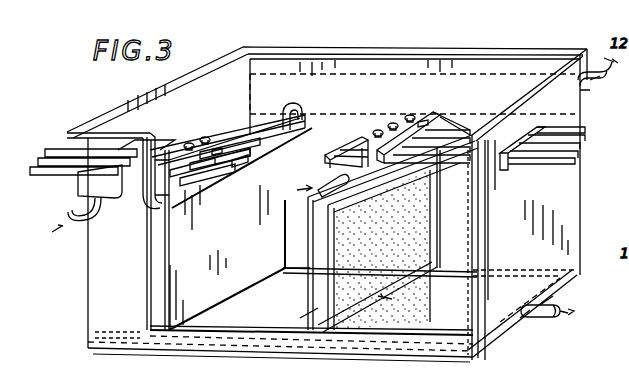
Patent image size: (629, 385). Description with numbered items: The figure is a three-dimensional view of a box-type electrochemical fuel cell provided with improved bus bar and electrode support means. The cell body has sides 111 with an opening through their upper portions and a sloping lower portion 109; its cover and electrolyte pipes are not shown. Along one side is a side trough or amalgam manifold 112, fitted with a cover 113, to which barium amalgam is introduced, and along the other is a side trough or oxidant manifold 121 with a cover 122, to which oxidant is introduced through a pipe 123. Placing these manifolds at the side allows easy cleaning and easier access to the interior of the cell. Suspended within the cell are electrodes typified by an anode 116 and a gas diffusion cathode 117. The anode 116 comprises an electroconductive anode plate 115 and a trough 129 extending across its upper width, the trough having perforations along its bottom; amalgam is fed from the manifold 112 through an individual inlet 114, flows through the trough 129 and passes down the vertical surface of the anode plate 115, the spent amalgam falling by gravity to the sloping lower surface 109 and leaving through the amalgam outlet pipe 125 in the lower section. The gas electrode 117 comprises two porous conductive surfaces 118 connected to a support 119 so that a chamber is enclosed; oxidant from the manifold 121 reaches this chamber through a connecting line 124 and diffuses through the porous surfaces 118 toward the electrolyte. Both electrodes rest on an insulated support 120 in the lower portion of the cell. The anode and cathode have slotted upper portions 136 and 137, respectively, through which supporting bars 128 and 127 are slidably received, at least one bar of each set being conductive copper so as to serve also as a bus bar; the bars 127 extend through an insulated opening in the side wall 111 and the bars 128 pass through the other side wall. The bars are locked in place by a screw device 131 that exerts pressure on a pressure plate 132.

The sloping lower portion 109 is at (370, 358).
The sides 111 is at (158, 107).
The side trough 112 is at (593, 95).
The cover 113 is at (590, 53).
The individual inlet 114 is at (292, 103).
The anode plate 115 is at (242, 241).
The anode 116 is at (183, 305).
The gas diffusion cathode 117 is at (390, 300).
The porous conductive surfaces 118 is at (310, 290).
The support 119 is at (305, 320).
The support 120 is at (285, 272).
The side trough 121 is at (110, 198).
The cover 122 is at (82, 183).
The pipe 123 is at (72, 213).
The connecting line 124 is at (325, 178).
The amalgam outlet pipe 125 is at (542, 317).
The bars 127 is at (570, 158).
The bars 128 is at (238, 166).
The trough 129 is at (312, 128).
The screw device 131 is at (205, 137).
The pressure plate 132 is at (219, 149).
The upper portion 136 is at (213, 142).
The upper portion 137 is at (428, 120).